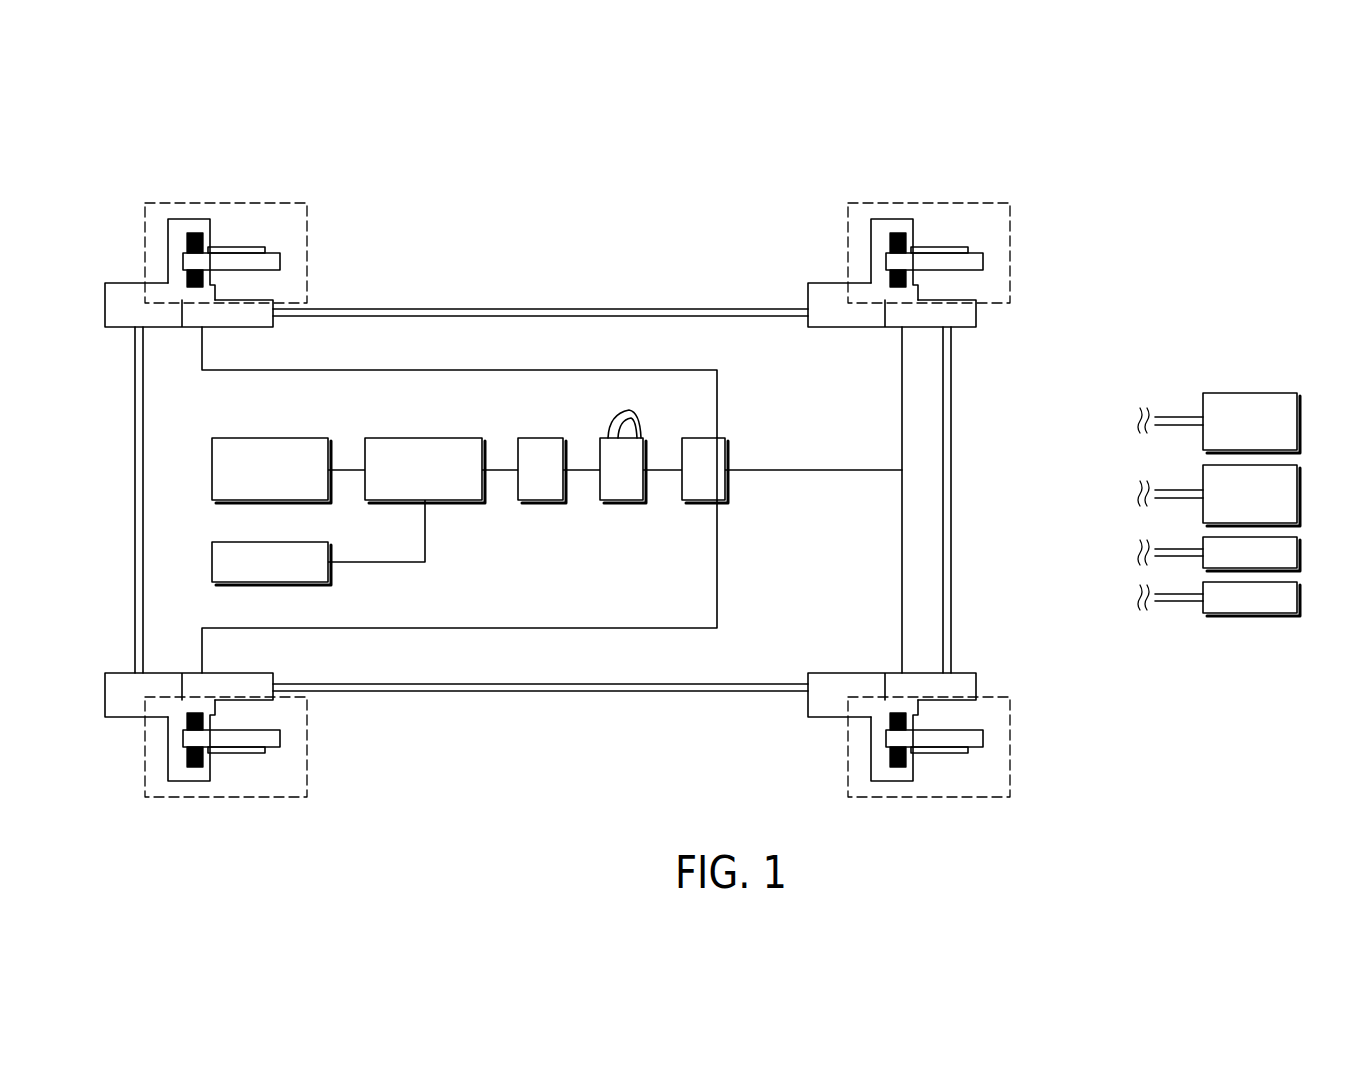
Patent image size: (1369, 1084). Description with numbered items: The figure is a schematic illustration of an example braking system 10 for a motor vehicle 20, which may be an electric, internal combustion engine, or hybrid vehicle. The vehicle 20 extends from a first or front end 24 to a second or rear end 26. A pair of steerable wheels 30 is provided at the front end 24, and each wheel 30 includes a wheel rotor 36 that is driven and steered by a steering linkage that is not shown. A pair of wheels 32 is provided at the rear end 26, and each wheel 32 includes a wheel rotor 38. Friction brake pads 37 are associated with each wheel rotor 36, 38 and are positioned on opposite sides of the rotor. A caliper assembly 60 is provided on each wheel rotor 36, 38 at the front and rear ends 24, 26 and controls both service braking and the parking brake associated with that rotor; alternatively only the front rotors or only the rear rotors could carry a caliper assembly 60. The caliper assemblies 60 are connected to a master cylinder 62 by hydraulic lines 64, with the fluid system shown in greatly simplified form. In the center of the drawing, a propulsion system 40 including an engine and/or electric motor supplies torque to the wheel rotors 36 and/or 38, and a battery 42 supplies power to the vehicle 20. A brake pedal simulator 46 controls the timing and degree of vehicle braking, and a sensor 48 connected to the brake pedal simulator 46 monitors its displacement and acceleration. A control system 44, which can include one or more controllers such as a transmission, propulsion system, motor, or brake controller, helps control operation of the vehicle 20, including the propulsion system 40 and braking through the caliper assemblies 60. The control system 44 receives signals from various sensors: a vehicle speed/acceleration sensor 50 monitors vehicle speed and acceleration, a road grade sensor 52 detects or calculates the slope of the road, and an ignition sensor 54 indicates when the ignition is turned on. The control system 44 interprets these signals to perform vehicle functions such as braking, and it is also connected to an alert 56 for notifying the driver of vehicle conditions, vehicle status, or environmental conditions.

The braking system 10 is at (495, 359).
The motor vehicle 20 is at (626, 290).
The front end 24 is at (113, 153).
The rear end 26 is at (1036, 186).
The steerable wheels 30 is at (307, 227).
The wheels 32 is at (1010, 227).
The wheel rotor 36 is at (276, 258).
The friction brake pads 37 is at (206, 236).
The wheel rotor 38 is at (979, 258).
The propulsion system 40 is at (211, 472).
The battery 42 is at (211, 562).
The control system 44 is at (416, 437).
The brake pedal simulator 46 is at (610, 437).
The sensor 48 is at (540, 437).
The vehicle speed/acceleration sensor 50 is at (1297, 420).
The road grade sensor 52 is at (1297, 492).
The ignition sensor 54 is at (1297, 553).
The alert 56 is at (1297, 597).
The caliper assembly 60 is at (190, 218).
The master cylinder 62 is at (695, 437).
The hydraulic lines 64 is at (438, 368).